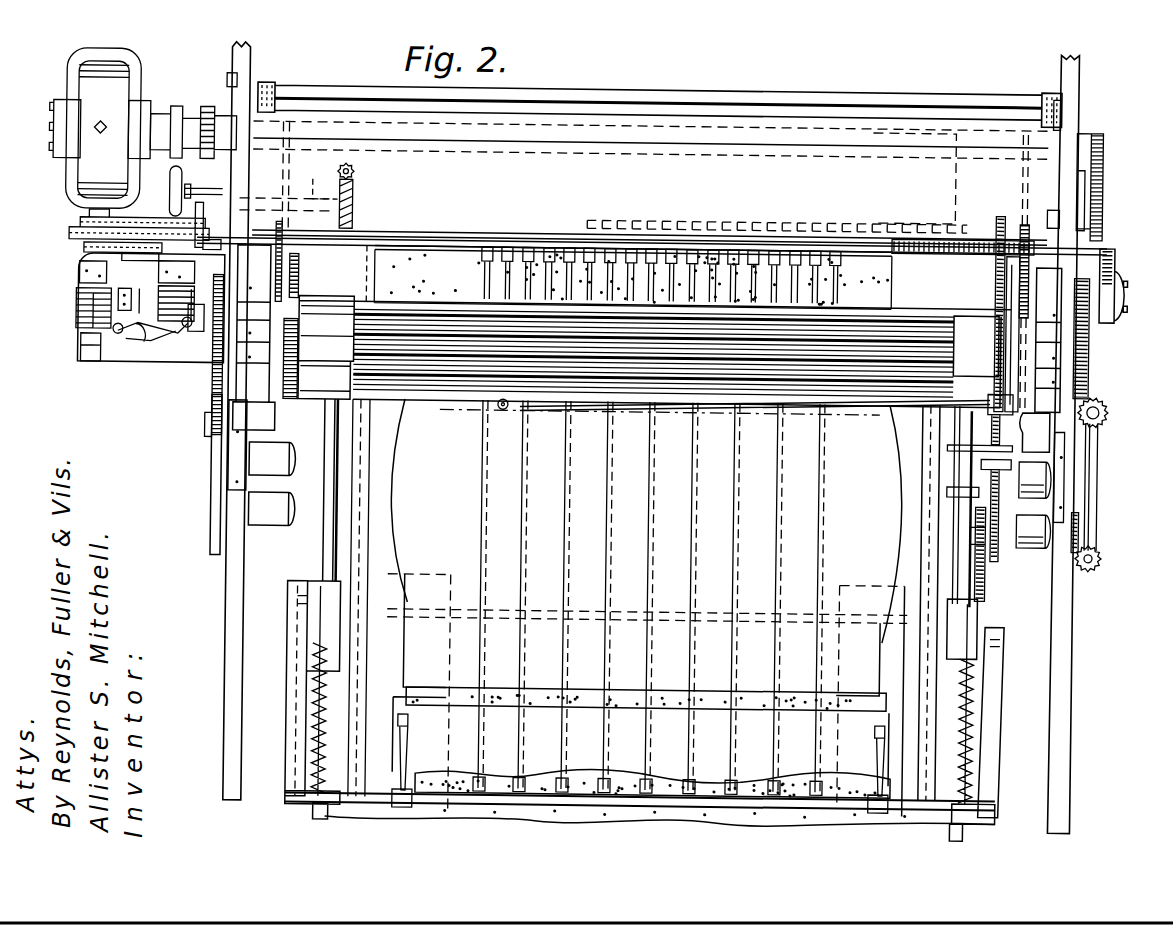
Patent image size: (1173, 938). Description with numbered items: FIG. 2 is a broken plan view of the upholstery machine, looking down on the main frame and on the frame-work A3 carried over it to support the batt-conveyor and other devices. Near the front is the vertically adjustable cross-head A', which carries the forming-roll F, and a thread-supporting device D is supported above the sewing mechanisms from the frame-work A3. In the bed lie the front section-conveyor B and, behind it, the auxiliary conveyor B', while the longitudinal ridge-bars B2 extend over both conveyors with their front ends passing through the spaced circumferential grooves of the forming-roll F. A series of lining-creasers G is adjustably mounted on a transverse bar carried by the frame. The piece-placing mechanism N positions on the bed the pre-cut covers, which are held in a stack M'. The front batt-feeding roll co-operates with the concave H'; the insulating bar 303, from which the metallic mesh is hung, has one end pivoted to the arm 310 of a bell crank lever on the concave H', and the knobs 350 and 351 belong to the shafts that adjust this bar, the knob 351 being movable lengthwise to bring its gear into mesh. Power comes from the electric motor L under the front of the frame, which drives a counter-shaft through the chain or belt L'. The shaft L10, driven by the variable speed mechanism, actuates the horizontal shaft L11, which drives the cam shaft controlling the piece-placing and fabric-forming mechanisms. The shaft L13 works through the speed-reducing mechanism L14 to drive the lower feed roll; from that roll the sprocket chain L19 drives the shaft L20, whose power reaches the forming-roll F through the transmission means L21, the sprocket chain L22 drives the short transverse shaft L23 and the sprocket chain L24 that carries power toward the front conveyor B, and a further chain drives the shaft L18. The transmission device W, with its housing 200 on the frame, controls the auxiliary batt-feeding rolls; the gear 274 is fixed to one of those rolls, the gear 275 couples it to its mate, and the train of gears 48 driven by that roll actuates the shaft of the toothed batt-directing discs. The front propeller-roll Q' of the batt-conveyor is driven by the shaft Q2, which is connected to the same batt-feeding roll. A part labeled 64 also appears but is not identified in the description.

The frame-work A3 is at (228, 603).
The thread-supporting device D is at (697, 136).
The electric motor L is at (644, 151).
The horizontal shaft L11 is at (310, 186).
The shaft L10 is at (352, 175).
The chain or belt L' is at (777, 205).
The sprocket chain L19 is at (1018, 186).
The cross-head A' is at (634, 218).
The forming-roll F is at (544, 248).
The lining-creasers G is at (840, 303).
The concave H' is at (654, 384).
The bar 303 is at (530, 408).
The arm 310 is at (500, 410).
The front section-conveyor B is at (544, 594).
The auxiliary conveyor B' is at (314, 597).
The ridge-bars B2 is at (678, 690).
The piece-placing mechanism N is at (288, 712).
The stack of pre-cut covers M' is at (568, 675).
The gear 274 is at (210, 410).
The gear rack 64 is at (300, 292).
The speed-reducing mechanism L14 is at (282, 276).
The shaft L13 is at (298, 278).
The shaft L18 is at (65, 74).
The transmission device W is at (70, 277).
The housing 200 is at (125, 360).
The sprocket chain L22 is at (1098, 162).
The short transverse shaft L23 is at (1057, 212).
The sprocket chain L24 is at (1112, 278).
The transmission means L21 is at (994, 292).
The shaft L20 is at (1074, 318).
The gear 275 is at (1088, 373).
The train of gears 48 is at (1040, 412).
The shaft Q2 is at (1088, 505).
The front propeller-roll Q' is at (1031, 525).
The knob 351 is at (980, 460).
The knob 350 is at (955, 488).